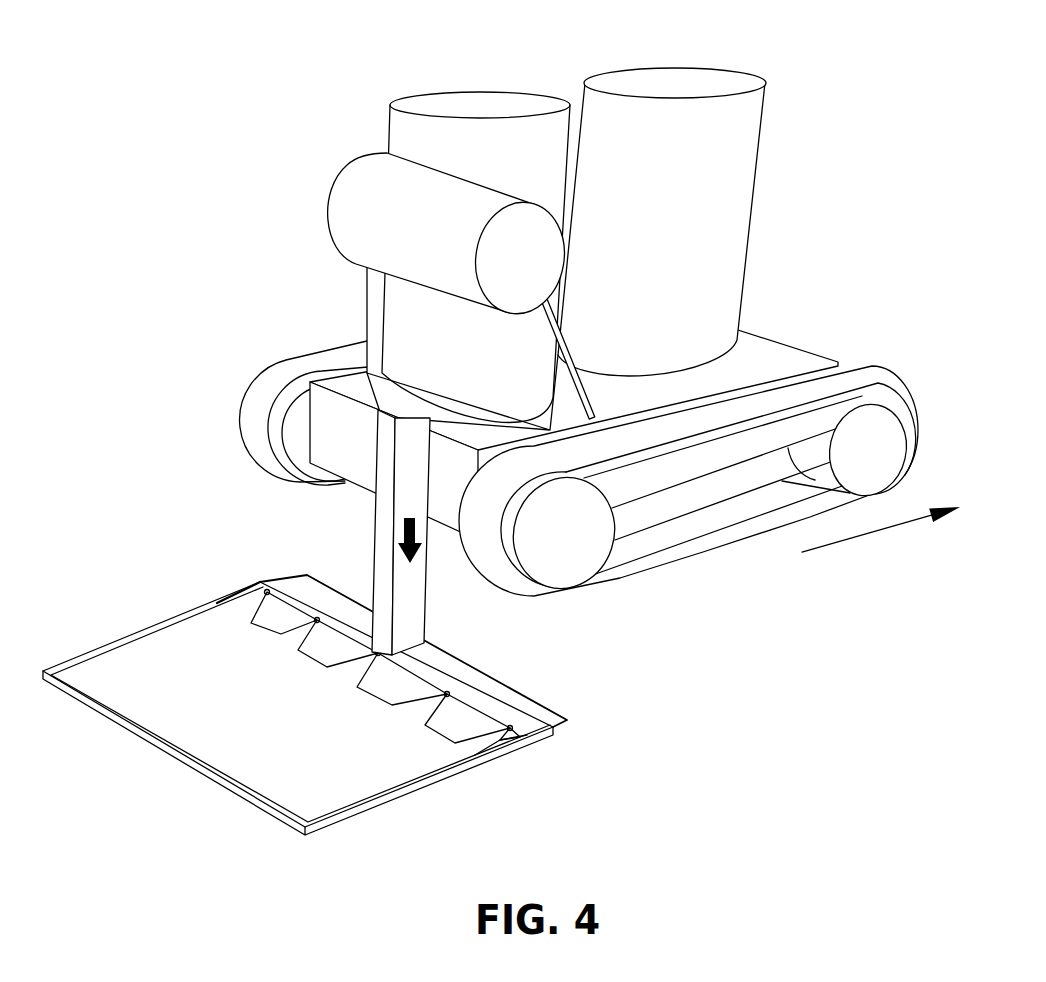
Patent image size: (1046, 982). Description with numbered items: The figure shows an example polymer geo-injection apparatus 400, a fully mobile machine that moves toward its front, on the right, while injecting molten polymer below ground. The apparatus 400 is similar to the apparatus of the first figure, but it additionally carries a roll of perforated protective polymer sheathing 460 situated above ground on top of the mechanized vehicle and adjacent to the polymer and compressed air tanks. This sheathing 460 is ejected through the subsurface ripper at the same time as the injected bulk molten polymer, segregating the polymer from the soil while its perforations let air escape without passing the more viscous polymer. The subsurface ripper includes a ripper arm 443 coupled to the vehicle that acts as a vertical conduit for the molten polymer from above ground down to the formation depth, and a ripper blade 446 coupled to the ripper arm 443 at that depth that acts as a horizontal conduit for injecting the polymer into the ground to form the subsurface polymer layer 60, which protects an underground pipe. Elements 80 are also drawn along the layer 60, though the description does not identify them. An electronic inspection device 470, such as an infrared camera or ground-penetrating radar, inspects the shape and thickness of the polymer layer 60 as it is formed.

The polymer geo-injection apparatus 400 is at (856, 80).
The polymer sheathing roll 460 is at (352, 198).
The ripper arm 443 is at (377, 526).
The electronic inspection device 470 is at (343, 566).
The tabs 80 is at (470, 718).
The ripper blade 446 is at (557, 729).
The subsurface polymer layer 60 is at (366, 753).